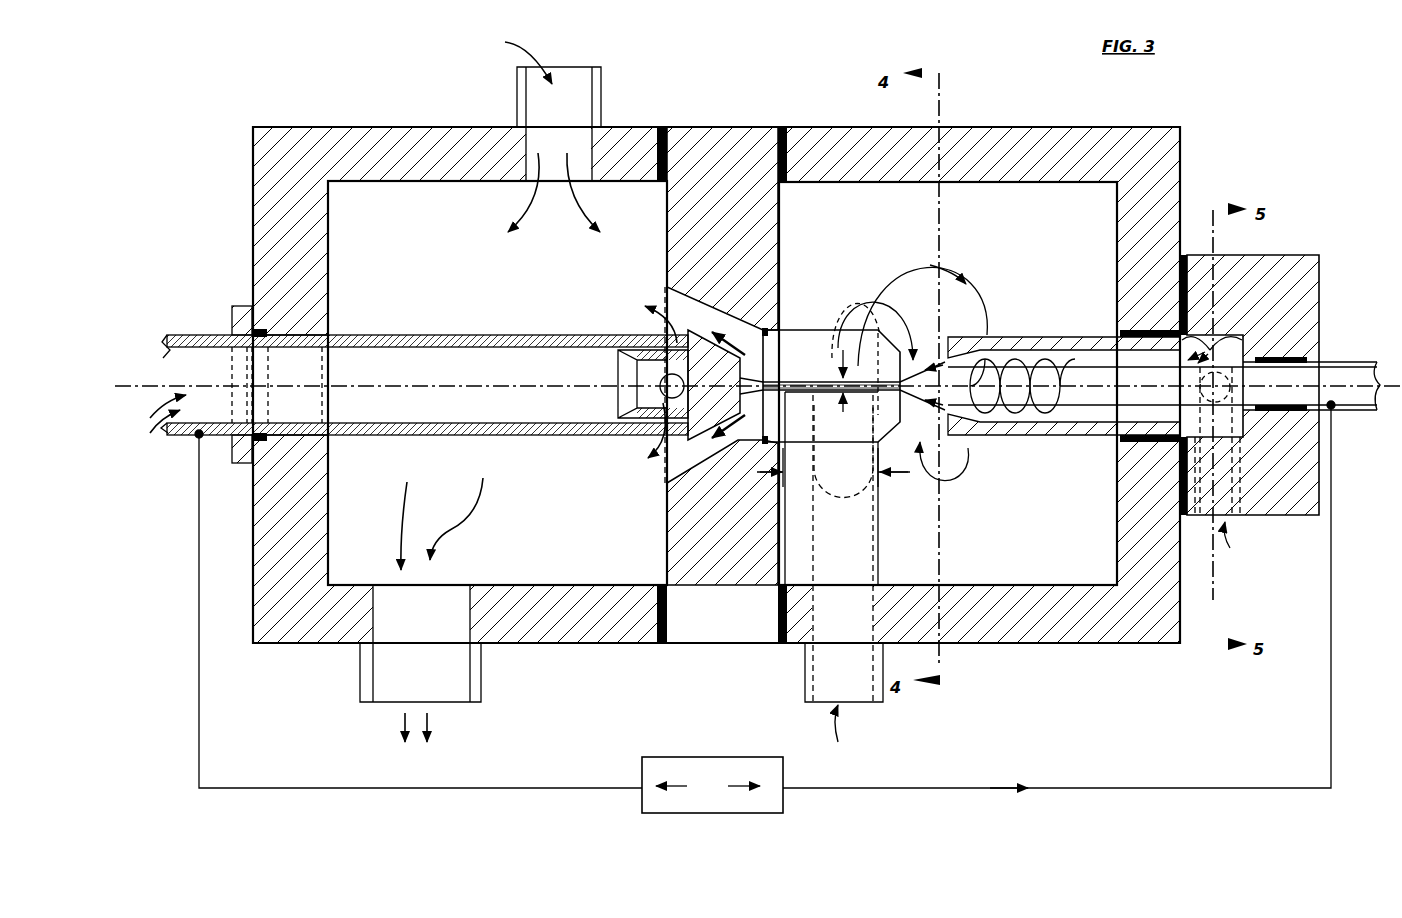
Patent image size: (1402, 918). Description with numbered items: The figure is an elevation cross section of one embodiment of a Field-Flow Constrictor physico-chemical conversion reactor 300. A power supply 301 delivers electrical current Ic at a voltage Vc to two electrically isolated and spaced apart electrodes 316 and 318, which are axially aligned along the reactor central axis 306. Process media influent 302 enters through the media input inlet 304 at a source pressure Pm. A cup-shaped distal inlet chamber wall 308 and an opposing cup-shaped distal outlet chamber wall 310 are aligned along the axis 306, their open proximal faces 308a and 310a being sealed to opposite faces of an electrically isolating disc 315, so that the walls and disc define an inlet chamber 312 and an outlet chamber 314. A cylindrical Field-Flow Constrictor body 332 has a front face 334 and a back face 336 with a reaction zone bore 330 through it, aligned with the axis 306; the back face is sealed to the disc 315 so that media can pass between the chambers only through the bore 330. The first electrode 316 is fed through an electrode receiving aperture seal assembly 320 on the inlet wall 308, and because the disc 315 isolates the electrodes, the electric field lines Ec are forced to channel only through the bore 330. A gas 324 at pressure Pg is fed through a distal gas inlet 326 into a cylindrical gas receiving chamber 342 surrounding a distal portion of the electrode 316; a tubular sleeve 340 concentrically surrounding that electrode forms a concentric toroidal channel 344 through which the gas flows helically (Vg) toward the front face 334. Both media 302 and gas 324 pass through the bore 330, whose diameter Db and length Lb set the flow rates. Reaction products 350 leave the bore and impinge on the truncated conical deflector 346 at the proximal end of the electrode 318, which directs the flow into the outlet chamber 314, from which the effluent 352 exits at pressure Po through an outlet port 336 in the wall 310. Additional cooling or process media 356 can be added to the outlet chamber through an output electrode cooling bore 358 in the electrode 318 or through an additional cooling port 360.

The physico-chemical conversion reactor 300 is at (1216, 86).
The power supply 301 is at (700, 855).
The process media influent 302 is at (888, 745).
The media input inlet 304 is at (808, 703).
The reactor central axis 306 is at (128, 388).
The distal inlet chamber wall 308 is at (985, 644).
The open proximal face of inlet chamber wall 308a is at (782, 127).
The distal outlet chamber wall 310 is at (525, 645).
The open proximal face of outlet chamber wall 310a is at (664, 127).
The inlet chamber 312 is at (948, 383).
The outlet chamber 314 is at (497, 383).
The electrically isolating disc 315 is at (667, 513).
The first cylindrical electrode 316 is at (1372, 362).
The second cylindrical electrode 318 is at (190, 334).
The electrode receiving aperture seal assembly 320 is at (1310, 255).
The gas 324 is at (1275, 560).
The distal gas inlet 326 is at (1235, 517).
The reaction zone bore 330 is at (824, 333).
The Field-Flow Constrictor body 332 is at (245, 464).
The front face 334 is at (908, 404).
The outlet port 336 is at (360, 688).
The tubular sleeve 340 is at (985, 337).
The gas receiving chamber 342 is at (1222, 340).
The concentric toroidal channel 344 is at (1055, 420).
The truncated conical deflector 346 is at (700, 445).
The reaction products 350 is at (442, 524).
The effluent 352 is at (461, 733).
The additional cooling/process media 356 is at (122, 440).
The output electrode cooling bore 358 is at (175, 348).
The additional cooling port 360 is at (601, 85).